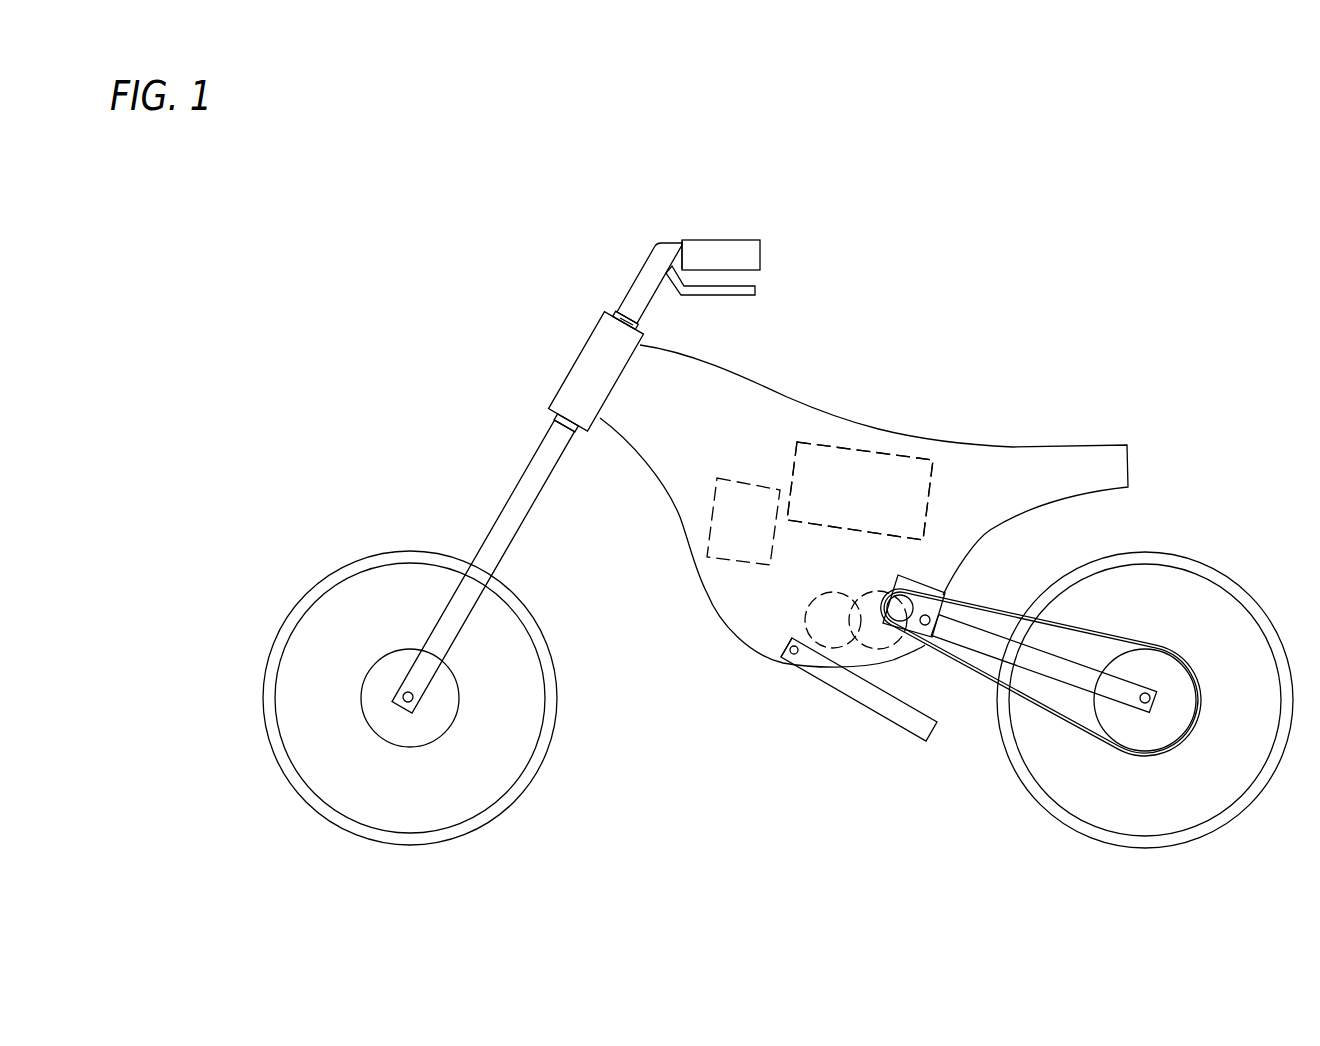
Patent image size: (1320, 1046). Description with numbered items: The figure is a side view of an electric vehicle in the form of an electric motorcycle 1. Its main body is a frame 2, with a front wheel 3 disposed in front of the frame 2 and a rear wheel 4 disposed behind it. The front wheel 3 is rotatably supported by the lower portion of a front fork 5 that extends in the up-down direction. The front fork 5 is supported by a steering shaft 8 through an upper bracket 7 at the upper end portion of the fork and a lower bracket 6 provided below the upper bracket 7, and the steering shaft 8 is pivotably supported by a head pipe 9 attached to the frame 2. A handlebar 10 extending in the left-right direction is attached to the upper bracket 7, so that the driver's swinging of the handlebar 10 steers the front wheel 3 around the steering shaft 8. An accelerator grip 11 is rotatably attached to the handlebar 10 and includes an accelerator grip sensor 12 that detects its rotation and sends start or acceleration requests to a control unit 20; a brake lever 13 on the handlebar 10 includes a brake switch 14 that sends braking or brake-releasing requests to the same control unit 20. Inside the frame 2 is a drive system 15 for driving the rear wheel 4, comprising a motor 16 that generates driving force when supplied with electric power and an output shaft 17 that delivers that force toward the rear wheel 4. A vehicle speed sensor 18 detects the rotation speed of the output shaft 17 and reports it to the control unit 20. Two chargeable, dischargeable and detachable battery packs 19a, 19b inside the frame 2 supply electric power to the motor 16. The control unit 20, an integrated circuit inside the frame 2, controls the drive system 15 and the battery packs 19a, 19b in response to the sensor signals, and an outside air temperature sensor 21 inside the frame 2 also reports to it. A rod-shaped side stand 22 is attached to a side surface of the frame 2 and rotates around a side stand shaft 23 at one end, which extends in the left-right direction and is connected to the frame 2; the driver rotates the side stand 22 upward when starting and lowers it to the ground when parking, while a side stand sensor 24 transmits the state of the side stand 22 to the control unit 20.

The electric motorcycle 1 is at (1056, 299).
The frame 2 is at (790, 397).
The front wheel 3 is at (410, 551).
The rear wheel 4 is at (1215, 572).
The front fork 5 is at (525, 470).
The lower bracket 6 is at (556, 421).
The upper bracket 7 is at (626, 316).
The steering shaft 8 is at (612, 311).
The head pipe 9 is at (571, 370).
The handlebar 10 is at (659, 241).
The accelerator grip 11 is at (722, 240).
The accelerator grip sensor 12 is at (683, 240).
The brake lever 13 is at (745, 296).
The brake switch 14 is at (674, 333).
The drive system 15 is at (895, 684).
The motor 16 is at (803, 620).
The output shaft 17 is at (903, 637).
The vehicle speed sensor 18 is at (905, 572).
The battery pack 19a is at (917, 458).
The battery pack 19b is at (860, 491).
The control unit 20 is at (710, 517).
The outside air temperature sensor 21 is at (714, 402).
The side stand 22 is at (892, 725).
The side stand shaft 23 is at (795, 655).
The side stand sensor 24 is at (785, 660).